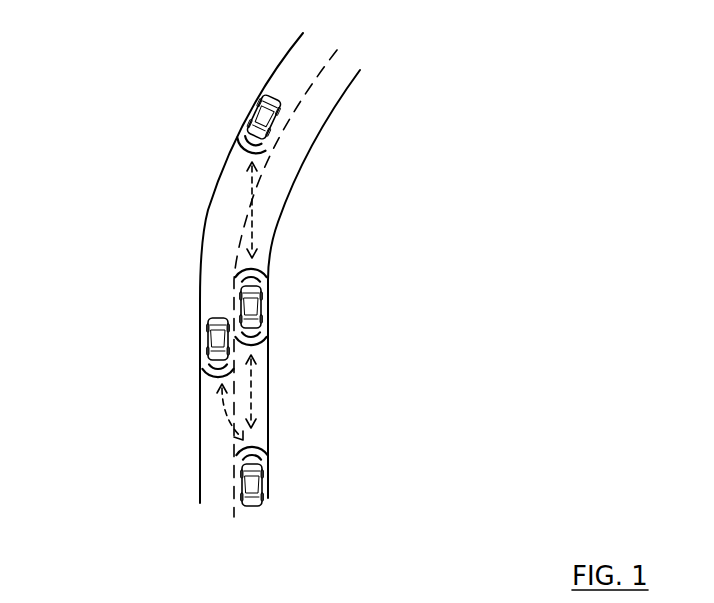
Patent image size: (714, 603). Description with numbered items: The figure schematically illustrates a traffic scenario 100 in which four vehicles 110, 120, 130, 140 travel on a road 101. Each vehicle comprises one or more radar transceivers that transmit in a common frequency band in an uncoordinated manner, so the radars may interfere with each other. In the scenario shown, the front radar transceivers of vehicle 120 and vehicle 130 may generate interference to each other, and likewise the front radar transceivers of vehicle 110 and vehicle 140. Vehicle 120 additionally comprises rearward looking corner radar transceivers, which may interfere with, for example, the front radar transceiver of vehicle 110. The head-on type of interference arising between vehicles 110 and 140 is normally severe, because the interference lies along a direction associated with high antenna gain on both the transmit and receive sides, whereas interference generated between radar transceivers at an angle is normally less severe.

The traffic scenario 100 is at (112, 62).
The road 101 is at (296, 182).
The vehicle 110 is at (261, 502).
The vehicle 120 is at (262, 307).
The vehicle 130 is at (258, 114).
The vehicle 140 is at (208, 333).